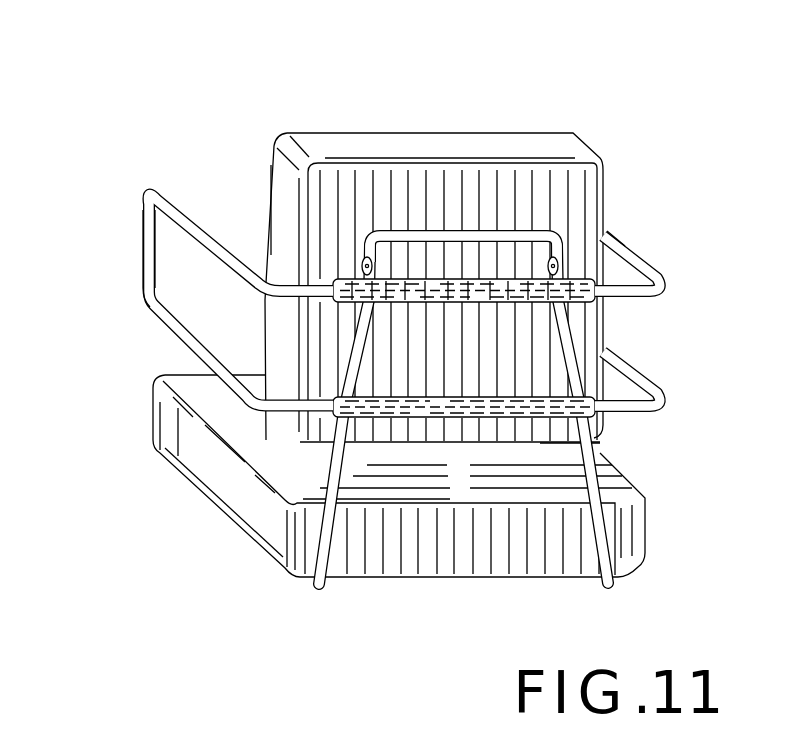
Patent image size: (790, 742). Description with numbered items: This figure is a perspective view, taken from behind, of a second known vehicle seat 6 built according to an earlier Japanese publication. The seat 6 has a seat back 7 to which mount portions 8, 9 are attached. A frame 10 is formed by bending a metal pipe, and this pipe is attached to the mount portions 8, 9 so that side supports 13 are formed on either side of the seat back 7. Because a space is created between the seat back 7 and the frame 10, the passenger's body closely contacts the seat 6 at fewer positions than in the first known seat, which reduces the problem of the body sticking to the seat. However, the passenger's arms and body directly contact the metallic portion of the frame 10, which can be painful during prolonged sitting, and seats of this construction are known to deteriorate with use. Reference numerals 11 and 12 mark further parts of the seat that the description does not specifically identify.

The seat 6 is at (546, 106).
The seat back 7 is at (436, 150).
The mount portion 8 is at (457, 305).
The mount portion 9 is at (464, 442).
The frame 10 is at (197, 215).
The lower armrest rail 11 is at (180, 338).
The connecting portion of armrest 12 is at (142, 243).
The side support 13 is at (147, 321).